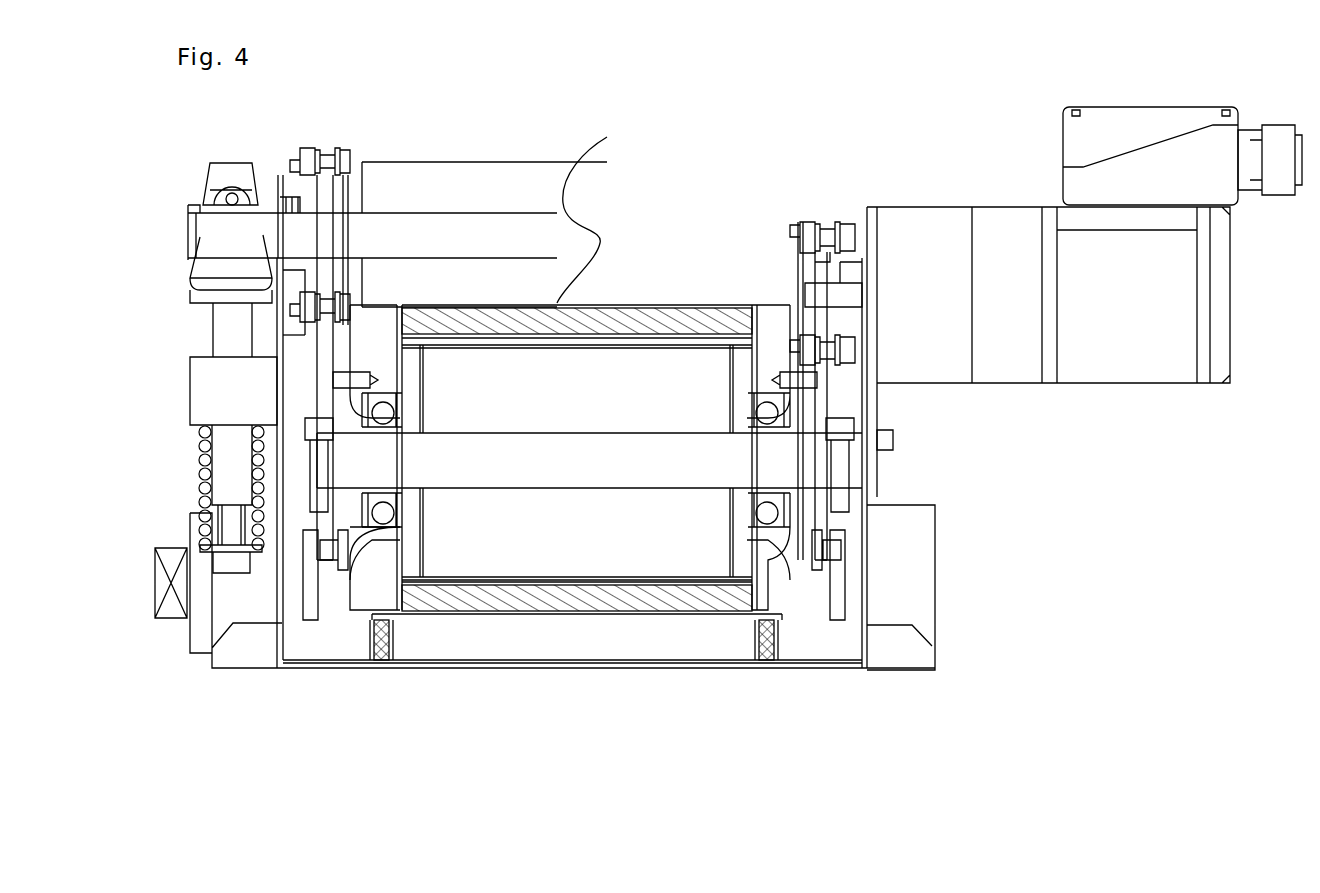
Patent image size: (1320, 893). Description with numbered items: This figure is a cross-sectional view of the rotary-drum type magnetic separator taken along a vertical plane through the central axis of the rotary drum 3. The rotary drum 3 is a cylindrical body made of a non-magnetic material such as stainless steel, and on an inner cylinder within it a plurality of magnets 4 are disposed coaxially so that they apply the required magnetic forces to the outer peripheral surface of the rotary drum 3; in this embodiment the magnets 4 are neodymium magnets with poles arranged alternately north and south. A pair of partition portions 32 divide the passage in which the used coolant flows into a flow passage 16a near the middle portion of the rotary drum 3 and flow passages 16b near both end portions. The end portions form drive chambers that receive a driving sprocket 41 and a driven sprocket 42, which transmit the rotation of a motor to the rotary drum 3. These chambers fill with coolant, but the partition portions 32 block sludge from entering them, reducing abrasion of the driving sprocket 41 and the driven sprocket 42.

The rotary drum 3 is at (682, 275).
The magnets 4 is at (483, 600).
The flow passage 16a is at (565, 648).
The flow passages 16b is at (313, 643).
The partition portions 32 is at (377, 660).
The driving sprocket 41 is at (820, 568).
The driven sprocket 42 is at (320, 607).